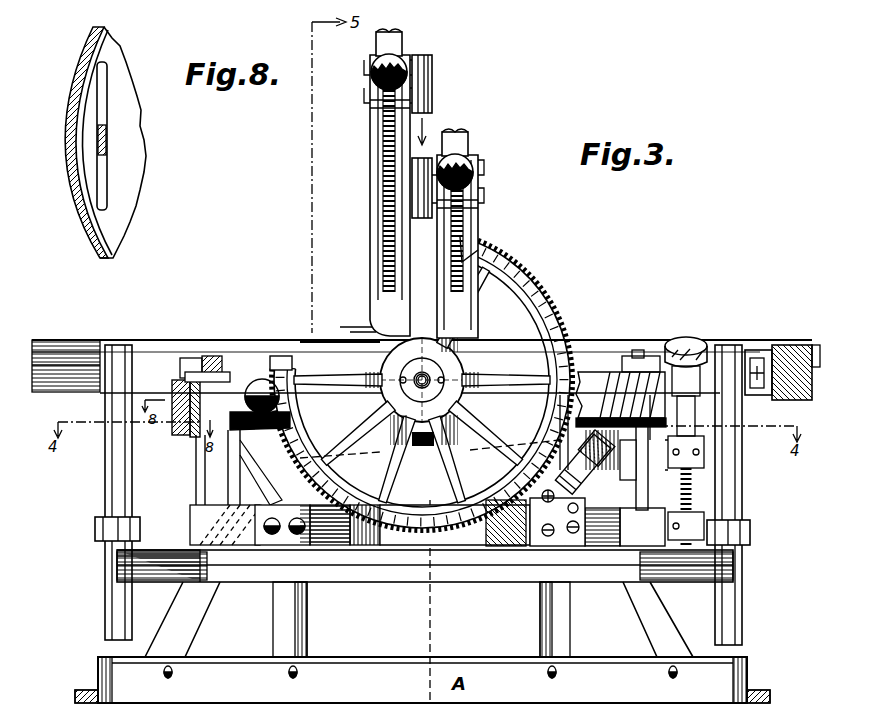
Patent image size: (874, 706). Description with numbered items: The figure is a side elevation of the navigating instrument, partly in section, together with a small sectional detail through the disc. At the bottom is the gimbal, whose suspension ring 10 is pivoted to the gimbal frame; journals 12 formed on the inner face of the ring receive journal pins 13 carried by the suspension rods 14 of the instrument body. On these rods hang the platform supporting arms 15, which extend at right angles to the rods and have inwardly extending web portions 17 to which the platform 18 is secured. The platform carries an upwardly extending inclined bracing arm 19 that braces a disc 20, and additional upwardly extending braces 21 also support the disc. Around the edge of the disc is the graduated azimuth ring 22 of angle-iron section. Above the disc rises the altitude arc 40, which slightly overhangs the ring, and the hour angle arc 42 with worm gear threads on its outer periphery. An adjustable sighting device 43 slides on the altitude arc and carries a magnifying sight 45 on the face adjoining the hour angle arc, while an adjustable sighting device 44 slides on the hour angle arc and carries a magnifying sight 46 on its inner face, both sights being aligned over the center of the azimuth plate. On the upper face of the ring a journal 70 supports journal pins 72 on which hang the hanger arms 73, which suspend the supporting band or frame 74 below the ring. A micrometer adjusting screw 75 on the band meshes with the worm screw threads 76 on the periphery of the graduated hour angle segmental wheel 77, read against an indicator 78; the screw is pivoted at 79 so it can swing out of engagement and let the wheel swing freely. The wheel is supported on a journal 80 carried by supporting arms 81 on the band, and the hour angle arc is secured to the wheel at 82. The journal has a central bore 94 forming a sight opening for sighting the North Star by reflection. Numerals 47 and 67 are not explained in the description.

In FIG. 3, the suspension ring 10 is at (776, 350).
In FIG. 3, the journals 12 is at (752, 350).
In FIG. 3, the journal pins 13 is at (700, 348).
In FIG. 3, the suspension rods 14 is at (110, 485).
In FIG. 3, the platform supporting arms 15 is at (140, 530).
In FIG. 3, the web portions 17 is at (424, 608).
In FIG. 3, the platform 18 is at (425, 566).
In FIG. 3, the inclined bracing arm 19 is at (419, 489).
In FIG. 8, the disc 20 is at (116, 62).
In FIG. 3, the disc 20 is at (600, 402).
In FIG. 3, the braces 21 is at (232, 478).
In FIG. 3, the graduated ring 22 is at (178, 385).
In FIG. 3, the altitude arc 40 is at (476, 222).
In FIG. 3, the hour angle arc 42 is at (370, 195).
In FIG. 3, the adjustable sighting device 43 is at (475, 165).
In FIG. 3, the adjustable sighting device 44 is at (402, 58).
In FIG. 3, the magnifying sight 45 is at (412, 190).
In FIG. 3, the magnifying sight 46 is at (432, 90).
In FIG. 3, the rack arm 47 is at (478, 250).
In FIG. 3, the rack teeth 67 is at (386, 234).
In FIG. 3, the journal 70 is at (214, 360).
In FIG. 3, the journal pins 72 is at (190, 360).
In FIG. 8, the hanger arms 73 is at (107, 137).
In FIG. 3, the hanger arms 73 is at (198, 462).
In FIG. 3, the supporting band or frame 74 is at (340, 546).
In FIG. 3, the micrometer adjusting screw 75 is at (522, 546).
In FIG. 3, the worm screw threads 76 is at (574, 324).
In FIG. 3, the hour angle segmental wheel 77 is at (530, 290).
In FIG. 3, the indicator 78 is at (468, 546).
In FIG. 3, the pivot 79 is at (570, 546).
In FIG. 3, the journal 80 is at (428, 378).
In FIG. 3, the supporting arms 81 is at (358, 446).
In FIG. 3, the securing point 82 is at (350, 330).
In FIG. 3, the central bore 94 is at (418, 386).